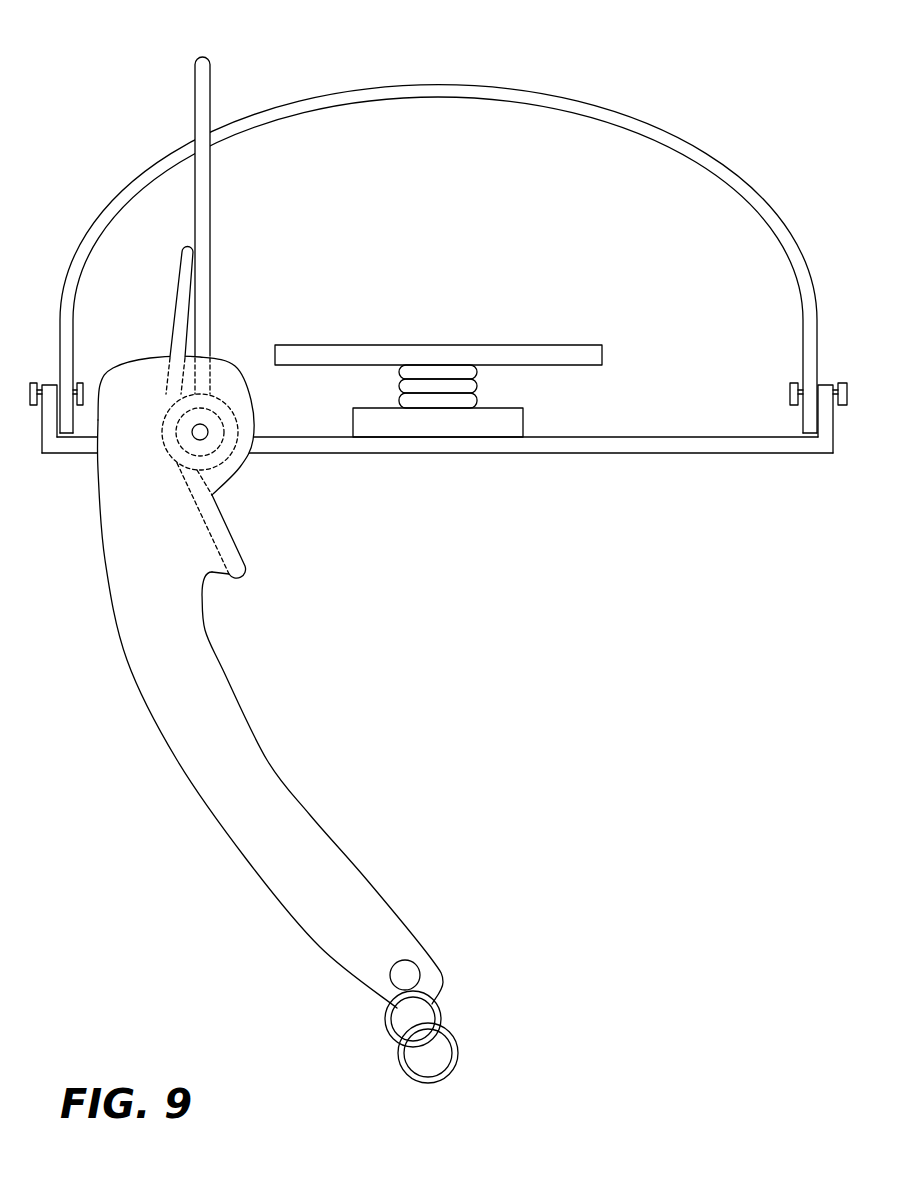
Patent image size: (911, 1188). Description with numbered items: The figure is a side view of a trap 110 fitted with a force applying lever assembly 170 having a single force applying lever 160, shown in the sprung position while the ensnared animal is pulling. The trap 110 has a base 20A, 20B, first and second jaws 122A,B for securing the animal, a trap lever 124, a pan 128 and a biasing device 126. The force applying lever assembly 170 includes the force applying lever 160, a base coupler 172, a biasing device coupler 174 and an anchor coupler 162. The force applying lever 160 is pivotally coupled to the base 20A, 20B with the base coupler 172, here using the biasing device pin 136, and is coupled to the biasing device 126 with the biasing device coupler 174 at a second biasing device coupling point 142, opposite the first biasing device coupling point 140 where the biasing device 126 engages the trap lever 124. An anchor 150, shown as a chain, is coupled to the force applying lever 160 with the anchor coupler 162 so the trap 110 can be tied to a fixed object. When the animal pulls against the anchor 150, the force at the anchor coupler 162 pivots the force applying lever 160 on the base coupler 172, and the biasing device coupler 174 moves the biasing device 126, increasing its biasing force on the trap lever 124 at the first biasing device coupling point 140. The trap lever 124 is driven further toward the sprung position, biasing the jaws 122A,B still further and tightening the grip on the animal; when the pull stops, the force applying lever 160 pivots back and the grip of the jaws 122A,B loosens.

The trap 110 is at (438, 268).
The first and second jaws 122A,B is at (473, 90).
The trap lever 124 is at (198, 110).
The first biasing device coupling point 140 is at (183, 305).
The pan 128 is at (522, 350).
The base coupler 172 is at (203, 425).
The biasing device pin 136 is at (209, 430).
The biasing device 126 is at (166, 433).
The second biasing device coupling point 142 is at (223, 523).
The biasing device coupler 174 is at (232, 557).
The base 20B is at (403, 448).
The base 20A is at (502, 430).
The force applying lever 160 is at (215, 683).
The anchor coupler 162 is at (408, 963).
The anchor 150 is at (482, 1036).
The force applying lever assembly 170 is at (316, 719).